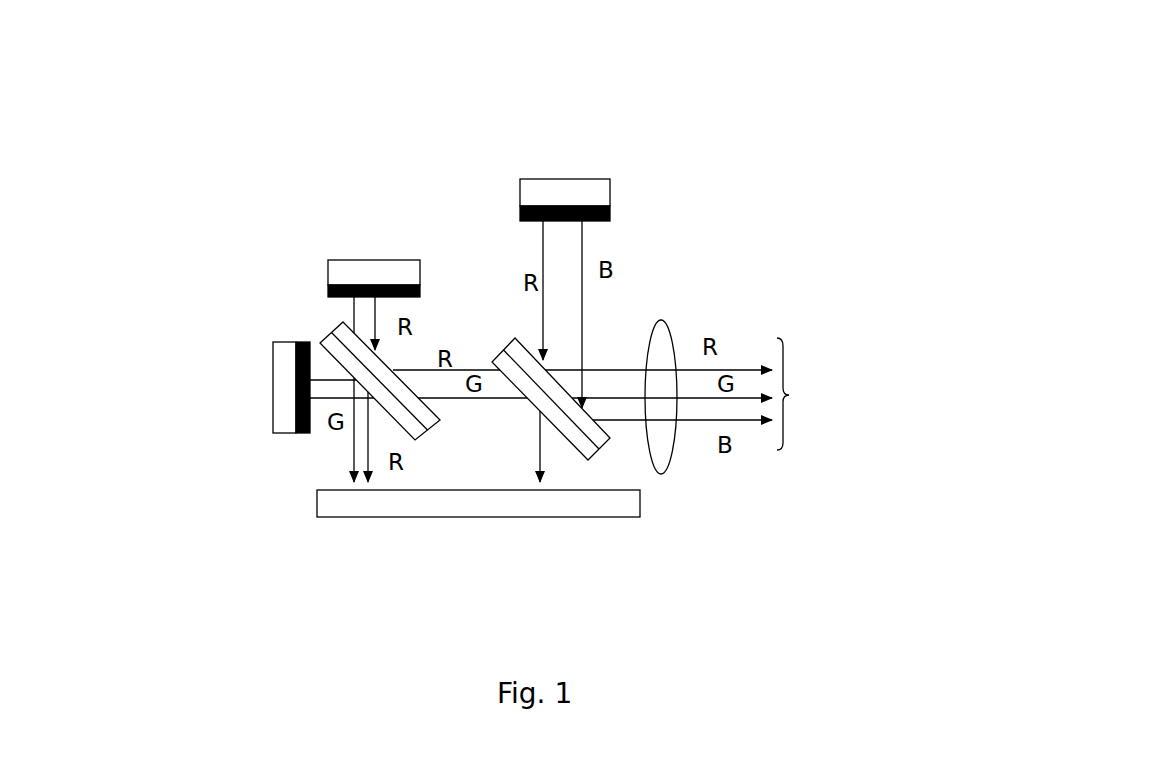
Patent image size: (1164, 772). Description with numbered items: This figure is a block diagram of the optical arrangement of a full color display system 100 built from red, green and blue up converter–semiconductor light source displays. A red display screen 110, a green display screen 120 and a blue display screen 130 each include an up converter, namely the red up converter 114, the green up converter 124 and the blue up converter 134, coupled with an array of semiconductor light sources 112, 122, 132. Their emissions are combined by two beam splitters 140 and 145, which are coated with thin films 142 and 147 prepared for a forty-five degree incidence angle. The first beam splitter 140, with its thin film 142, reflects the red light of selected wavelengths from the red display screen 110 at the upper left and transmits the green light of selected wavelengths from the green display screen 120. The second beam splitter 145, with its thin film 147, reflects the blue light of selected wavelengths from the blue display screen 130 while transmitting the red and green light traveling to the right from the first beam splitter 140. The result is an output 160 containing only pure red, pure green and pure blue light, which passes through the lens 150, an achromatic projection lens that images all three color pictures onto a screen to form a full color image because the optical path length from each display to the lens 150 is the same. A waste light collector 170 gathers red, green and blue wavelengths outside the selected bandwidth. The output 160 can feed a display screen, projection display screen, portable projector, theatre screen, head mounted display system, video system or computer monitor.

The display system 100 is at (147, 112).
The red display screen 110 is at (347, 240).
The semiconductor light source 112 is at (420, 270).
The red up converter 114 is at (420, 287).
The green display screen 120 is at (208, 388).
The semiconductor light source 122 is at (280, 433).
The green up converter 124 is at (298, 435).
The blue display screen 130 is at (518, 155).
The semiconductor light source 132 is at (612, 190).
The blue up converter 134 is at (612, 213).
The beamsplitter 140 is at (327, 333).
The thin film 142 is at (504, 446).
The beamsplitter 145 is at (598, 453).
The thin film 147 is at (502, 343).
The lens 150 is at (662, 318).
The output 160 is at (950, 444).
The waste light collector 170 is at (420, 508).